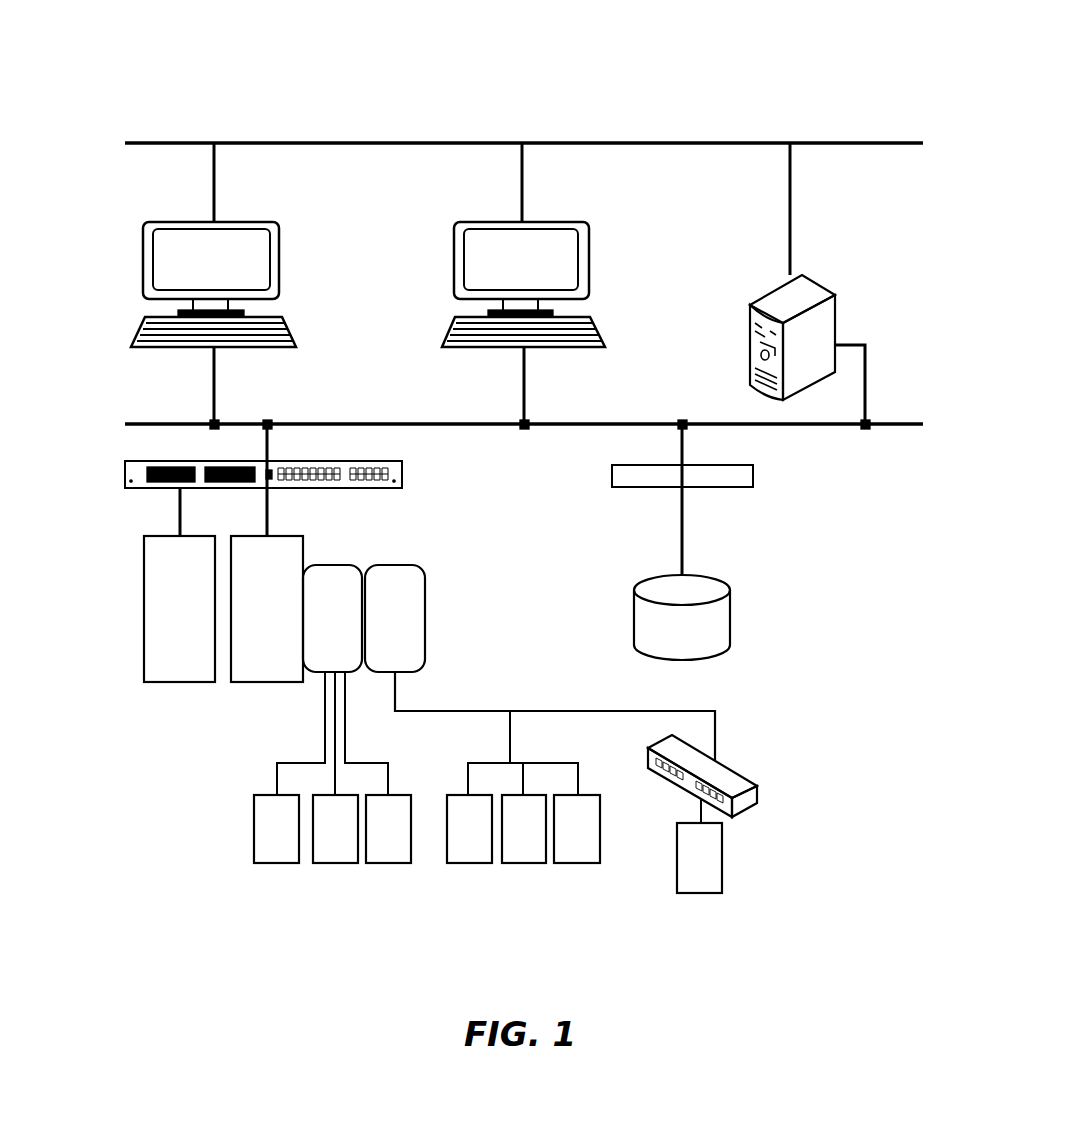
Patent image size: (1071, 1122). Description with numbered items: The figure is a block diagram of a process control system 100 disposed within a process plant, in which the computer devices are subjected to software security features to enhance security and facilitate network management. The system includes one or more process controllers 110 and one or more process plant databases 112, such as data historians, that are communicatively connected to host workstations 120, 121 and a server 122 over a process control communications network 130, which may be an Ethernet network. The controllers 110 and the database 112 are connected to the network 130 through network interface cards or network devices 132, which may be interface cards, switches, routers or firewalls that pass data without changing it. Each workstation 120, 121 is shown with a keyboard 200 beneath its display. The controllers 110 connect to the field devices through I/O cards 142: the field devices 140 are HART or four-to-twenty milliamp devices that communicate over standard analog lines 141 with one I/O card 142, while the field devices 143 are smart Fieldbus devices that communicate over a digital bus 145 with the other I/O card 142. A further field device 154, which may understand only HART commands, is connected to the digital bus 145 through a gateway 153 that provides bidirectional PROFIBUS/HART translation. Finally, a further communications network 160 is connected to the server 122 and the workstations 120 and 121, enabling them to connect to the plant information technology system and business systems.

The process control system 100 is at (737, 74).
The further communications network 160 is at (364, 142).
The process control communications network 130 is at (453, 428).
The workstation 121 is at (280, 258).
The workstation 120 is at (590, 256).
The keyboard 200 is at (590, 319).
The server 122 is at (836, 312).
The network interface card 132 is at (125, 470).
The process controller 110 is at (160, 628).
The I/O card 142 is at (352, 628).
The HART or analog 4-20 mA lines 141 is at (323, 720).
The field devices 140 is at (301, 876).
The digital bus 145 is at (465, 710).
The field devices 143 is at (493, 876).
The gateway 153 is at (736, 770).
The field device 154 is at (722, 862).
The process plant database 112 is at (731, 622).